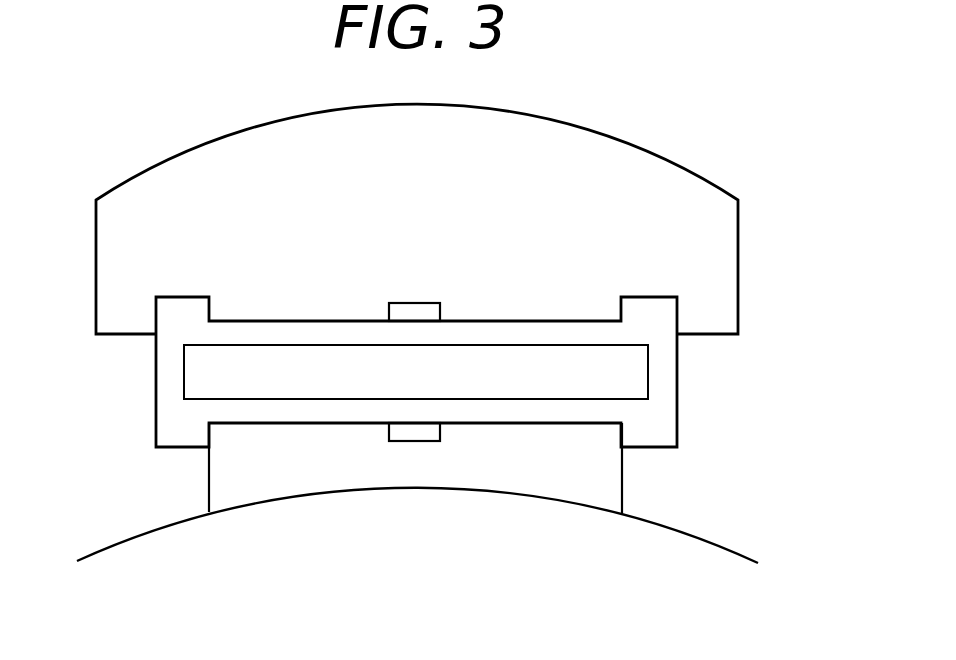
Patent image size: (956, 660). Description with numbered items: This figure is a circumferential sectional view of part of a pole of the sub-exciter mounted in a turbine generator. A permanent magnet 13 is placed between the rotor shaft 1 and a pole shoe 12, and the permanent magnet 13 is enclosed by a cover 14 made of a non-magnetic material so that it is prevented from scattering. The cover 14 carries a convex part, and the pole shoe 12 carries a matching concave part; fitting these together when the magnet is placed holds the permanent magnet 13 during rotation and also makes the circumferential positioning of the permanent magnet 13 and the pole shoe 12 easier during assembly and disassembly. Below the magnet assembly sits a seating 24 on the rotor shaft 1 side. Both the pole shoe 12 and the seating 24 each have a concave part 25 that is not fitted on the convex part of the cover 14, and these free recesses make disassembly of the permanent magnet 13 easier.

The rotor shaft 1 is at (723, 568).
The pole shoe 12 is at (721, 229).
The permanent magnet 13 is at (201, 372).
The cover 14 is at (666, 378).
The seating 24 is at (231, 478).
The concave part 25 is at (420, 308).